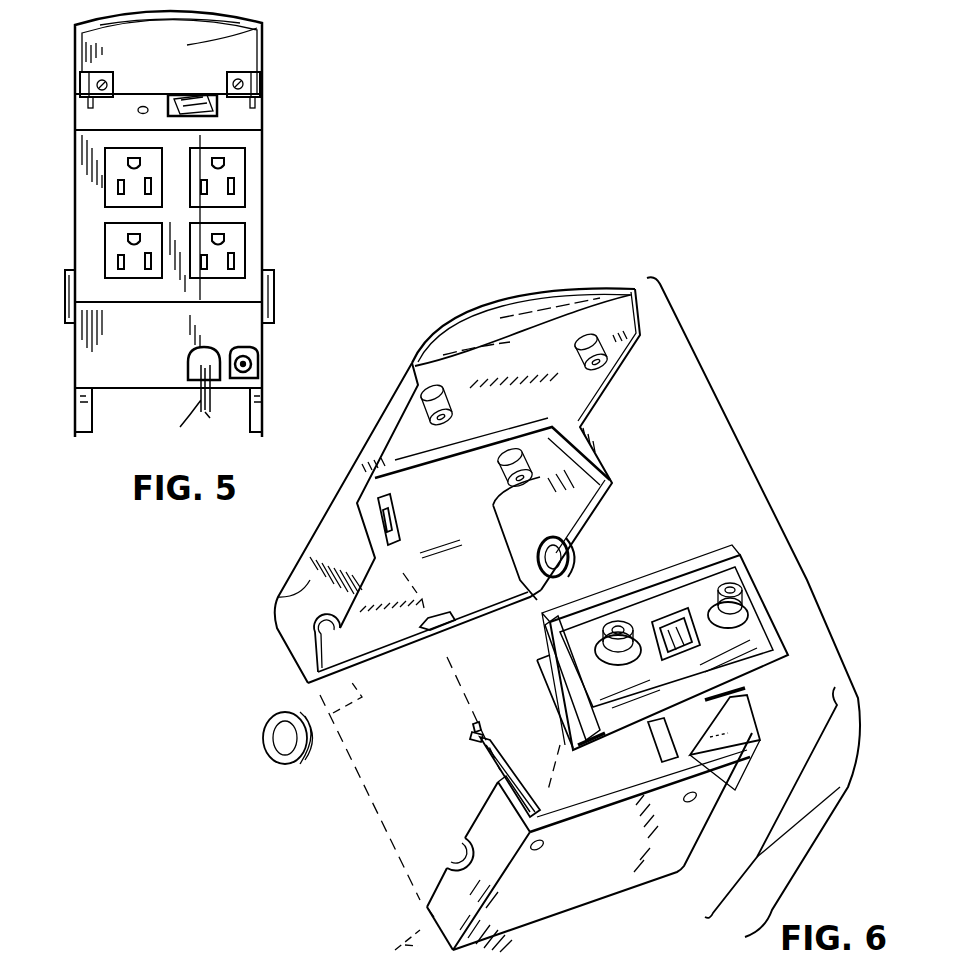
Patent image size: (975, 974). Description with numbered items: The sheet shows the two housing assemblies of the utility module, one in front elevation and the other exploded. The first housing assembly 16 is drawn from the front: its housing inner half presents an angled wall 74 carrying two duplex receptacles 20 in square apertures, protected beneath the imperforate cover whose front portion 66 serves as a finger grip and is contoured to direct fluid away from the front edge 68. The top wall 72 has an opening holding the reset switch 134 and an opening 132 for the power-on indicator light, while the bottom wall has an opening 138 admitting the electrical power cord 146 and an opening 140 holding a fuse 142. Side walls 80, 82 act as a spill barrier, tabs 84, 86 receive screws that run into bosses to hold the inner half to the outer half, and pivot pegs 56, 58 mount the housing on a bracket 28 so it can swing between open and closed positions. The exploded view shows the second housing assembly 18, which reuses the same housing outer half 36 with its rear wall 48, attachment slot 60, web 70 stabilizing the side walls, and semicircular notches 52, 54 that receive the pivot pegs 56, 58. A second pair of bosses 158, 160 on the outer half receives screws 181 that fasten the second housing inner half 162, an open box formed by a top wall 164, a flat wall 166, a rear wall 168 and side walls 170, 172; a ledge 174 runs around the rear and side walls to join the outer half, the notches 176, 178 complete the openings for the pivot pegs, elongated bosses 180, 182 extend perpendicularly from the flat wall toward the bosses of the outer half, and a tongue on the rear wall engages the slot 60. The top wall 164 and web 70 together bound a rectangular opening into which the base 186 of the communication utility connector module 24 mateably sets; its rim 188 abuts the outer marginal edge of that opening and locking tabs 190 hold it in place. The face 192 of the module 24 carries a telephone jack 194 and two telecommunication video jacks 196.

In FIG. 5, the housing assembly 16 is at (75, 50).
In FIG. 6, the housing assembly 18 is at (750, 855).
In FIG. 5, the utility connector module 20 is at (240, 248).
In FIG. 6, the communication utility connector module 24 is at (705, 585).
In FIG. 5, the bracket 28 is at (264, 422).
In FIG. 6, the housing outer half 36 is at (293, 603).
In FIG. 6, the rear wall 48 is at (452, 604).
In FIG. 6, the semicircular notch 52 is at (312, 636).
In FIG. 6, the semicircular notch 54 is at (546, 552).
In FIG. 5, the pivot peg 56 is at (67, 318).
In FIG. 6, the pivot peg 56 is at (275, 754).
In FIG. 5, the pivot peg 58 is at (274, 300).
In FIG. 6, the pivot peg 58 is at (578, 562).
In FIG. 6, the attachment slot 60 is at (458, 624).
In FIG. 5, the front portion 66 is at (257, 27).
In FIG. 6, the front portion 66 is at (618, 293).
In FIG. 5, the front edge 68 is at (203, 25).
In FIG. 6, the front edge 68 is at (562, 300).
In FIG. 6, the web 70 is at (514, 432).
In FIG. 5, the top wall 72 is at (264, 103).
In FIG. 5, the angled wall 74 is at (256, 182).
In FIG. 5, the side wall 80 is at (76, 172).
In FIG. 5, the side wall 82 is at (265, 160).
In FIG. 5, the tab 84 is at (113, 84).
In FIG. 5, the tab 86 is at (253, 82).
In FIG. 5, the opening 132 is at (142, 106).
In FIG. 5, the reset switch 134 is at (185, 96).
In FIG. 5, the opening 138 is at (192, 387).
In FIG. 5, the opening 140 is at (256, 362).
In FIG. 5, the fuse 142 is at (259, 370).
In FIG. 5, the electrical power cord 146 is at (200, 412).
In FIG. 6, the boss 158 is at (398, 520).
In FIG. 6, the boss 160 is at (500, 470).
In FIG. 6, the second housing inner half 162 is at (592, 898).
In FIG. 6, the top wall 164 is at (718, 790).
In FIG. 6, the flat wall 166 is at (602, 855).
In FIG. 6, the rear wall 168 is at (428, 926).
In FIG. 6, the side wall 170 is at (482, 805).
In FIG. 6, the side wall 172 is at (748, 712).
In FIG. 6, the ledge 174 is at (490, 832).
In FIG. 6, the notch 176 is at (448, 860).
In FIG. 6, the notch 178 is at (742, 770).
In FIG. 6, the elongated boss 180 is at (470, 740).
In FIG. 6, the screw 181 is at (470, 728).
In FIG. 6, the elongated boss 182 is at (648, 760).
In FIG. 6, the base 186 is at (552, 700).
In FIG. 6, the rim 188 is at (546, 640).
In FIG. 6, the locking tab 190 is at (580, 745).
In FIG. 6, the face 192 is at (630, 622).
In FIG. 6, the telephone jack 194 is at (668, 610).
In FIG. 6, the telecommunication video jack 196 is at (738, 585).